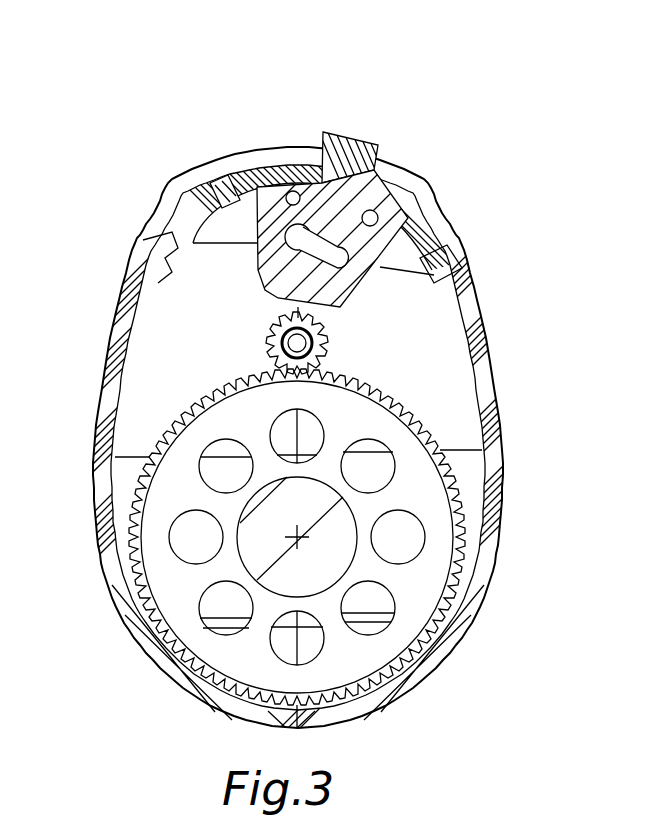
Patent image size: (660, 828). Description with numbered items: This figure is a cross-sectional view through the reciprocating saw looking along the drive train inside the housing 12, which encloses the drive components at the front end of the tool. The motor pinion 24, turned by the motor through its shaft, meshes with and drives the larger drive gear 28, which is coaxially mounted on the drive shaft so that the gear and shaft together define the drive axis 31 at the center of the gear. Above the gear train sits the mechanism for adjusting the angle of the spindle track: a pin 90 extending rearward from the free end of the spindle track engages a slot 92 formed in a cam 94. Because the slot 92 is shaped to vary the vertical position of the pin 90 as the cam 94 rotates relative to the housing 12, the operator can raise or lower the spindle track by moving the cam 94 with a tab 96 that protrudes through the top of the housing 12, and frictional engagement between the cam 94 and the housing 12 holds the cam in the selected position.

The housing 12 is at (488, 338).
The motor pinion 24 is at (263, 347).
The drive gear 28 is at (462, 487).
The drive axis 31 is at (303, 533).
The pin 90 is at (283, 200).
The slot 92 is at (420, 190).
The cam 94 is at (468, 250).
The tab 96 is at (363, 140).